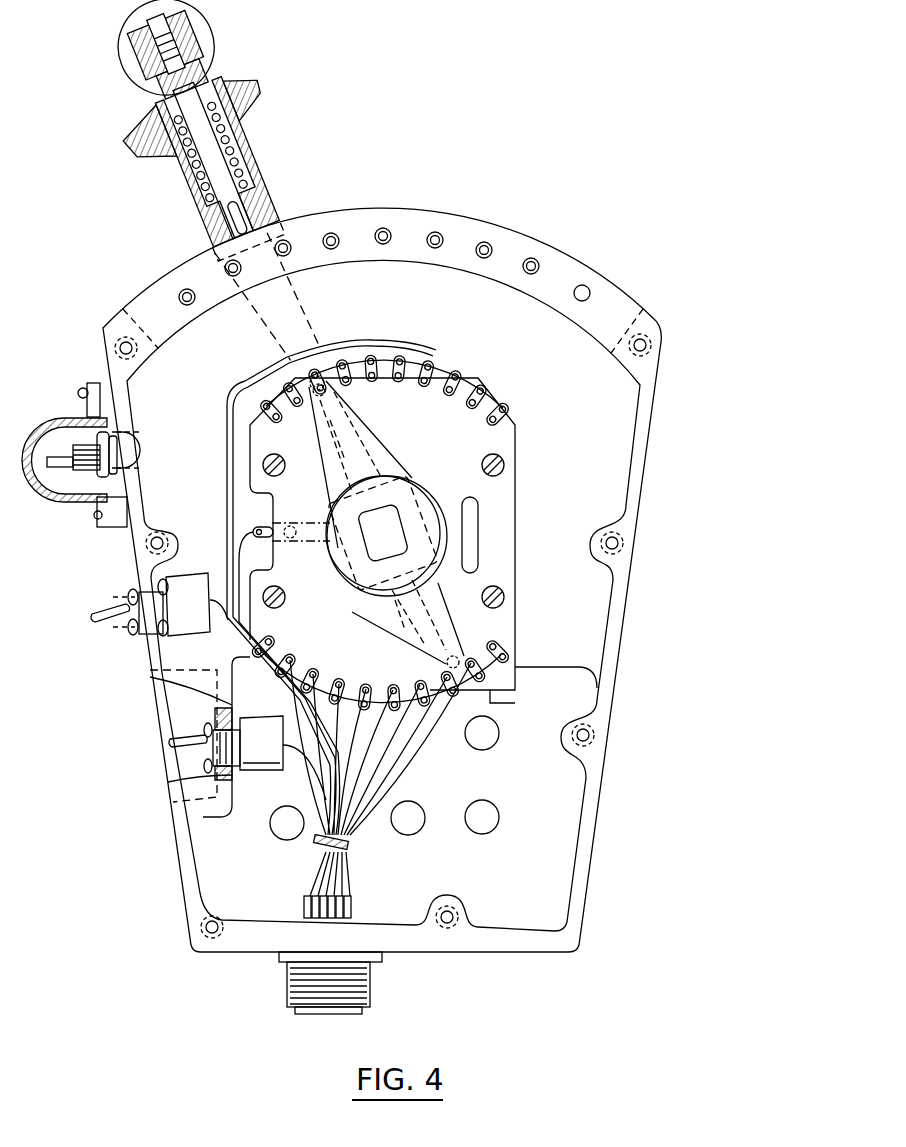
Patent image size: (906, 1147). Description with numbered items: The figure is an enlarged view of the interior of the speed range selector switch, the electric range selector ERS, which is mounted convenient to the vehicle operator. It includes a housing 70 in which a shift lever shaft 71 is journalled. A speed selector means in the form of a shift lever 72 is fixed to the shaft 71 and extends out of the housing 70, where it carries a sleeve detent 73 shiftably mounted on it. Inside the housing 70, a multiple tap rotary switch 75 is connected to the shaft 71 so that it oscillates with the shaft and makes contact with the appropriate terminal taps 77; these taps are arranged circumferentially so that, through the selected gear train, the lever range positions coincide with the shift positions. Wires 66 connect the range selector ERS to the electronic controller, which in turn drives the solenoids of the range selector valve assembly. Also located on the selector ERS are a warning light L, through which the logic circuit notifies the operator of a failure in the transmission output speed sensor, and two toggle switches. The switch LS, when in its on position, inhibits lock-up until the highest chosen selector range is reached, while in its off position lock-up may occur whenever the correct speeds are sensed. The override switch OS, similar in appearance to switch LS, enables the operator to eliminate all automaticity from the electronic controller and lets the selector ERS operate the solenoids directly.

The housing 70 is at (629, 590).
The shift lever shaft 71 is at (387, 523).
The shift lever 72 is at (222, 178).
The sleeve detent 73 is at (243, 133).
The multiple tap rotary switch 75 is at (365, 422).
The terminal taps 77 is at (388, 345).
The wires 66 is at (348, 874).
The warning light L is at (150, 444).
The lock-up inhibit switch LS is at (127, 600).
The override switch OS is at (207, 725).
The electric range selector ERS is at (656, 500).